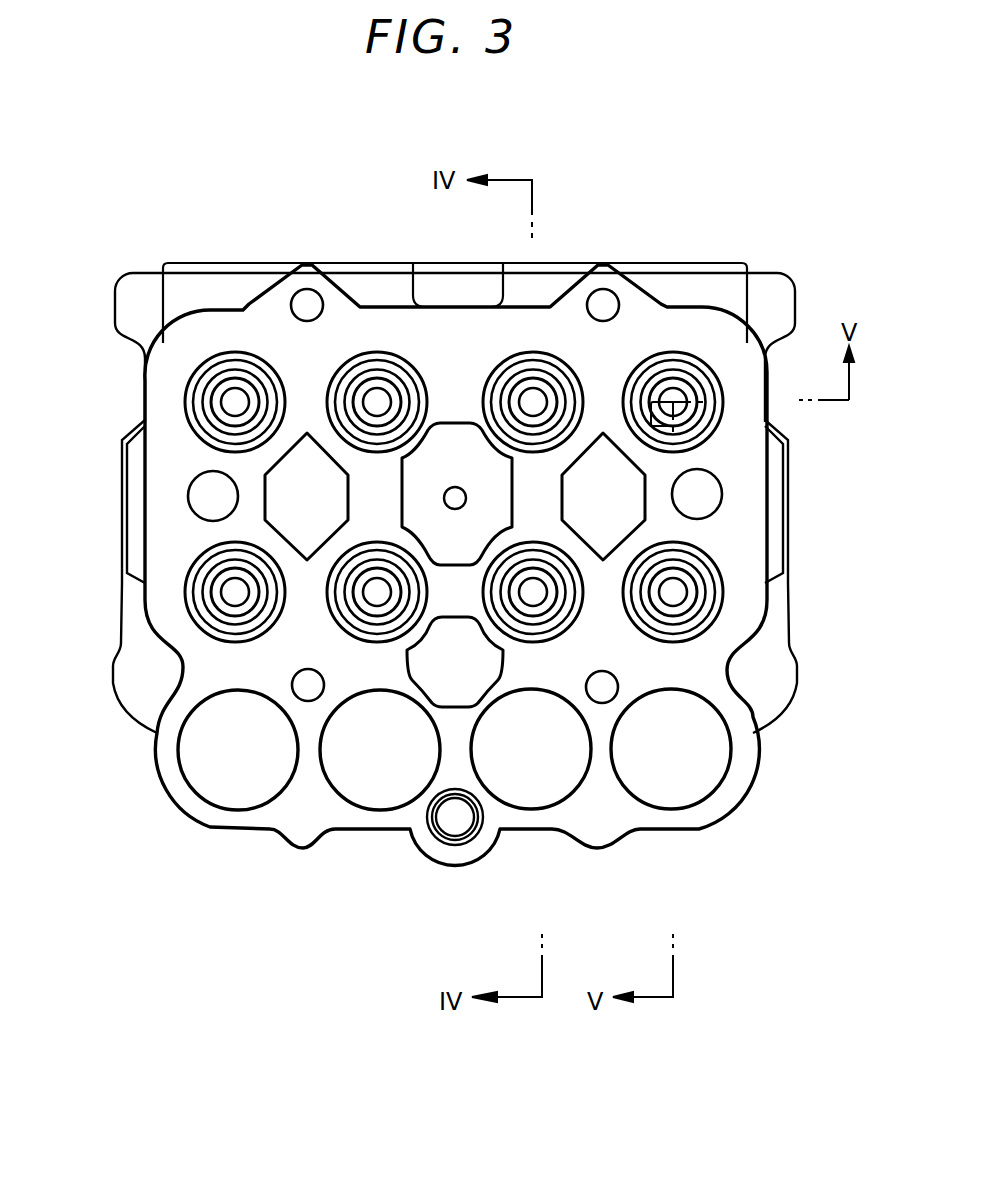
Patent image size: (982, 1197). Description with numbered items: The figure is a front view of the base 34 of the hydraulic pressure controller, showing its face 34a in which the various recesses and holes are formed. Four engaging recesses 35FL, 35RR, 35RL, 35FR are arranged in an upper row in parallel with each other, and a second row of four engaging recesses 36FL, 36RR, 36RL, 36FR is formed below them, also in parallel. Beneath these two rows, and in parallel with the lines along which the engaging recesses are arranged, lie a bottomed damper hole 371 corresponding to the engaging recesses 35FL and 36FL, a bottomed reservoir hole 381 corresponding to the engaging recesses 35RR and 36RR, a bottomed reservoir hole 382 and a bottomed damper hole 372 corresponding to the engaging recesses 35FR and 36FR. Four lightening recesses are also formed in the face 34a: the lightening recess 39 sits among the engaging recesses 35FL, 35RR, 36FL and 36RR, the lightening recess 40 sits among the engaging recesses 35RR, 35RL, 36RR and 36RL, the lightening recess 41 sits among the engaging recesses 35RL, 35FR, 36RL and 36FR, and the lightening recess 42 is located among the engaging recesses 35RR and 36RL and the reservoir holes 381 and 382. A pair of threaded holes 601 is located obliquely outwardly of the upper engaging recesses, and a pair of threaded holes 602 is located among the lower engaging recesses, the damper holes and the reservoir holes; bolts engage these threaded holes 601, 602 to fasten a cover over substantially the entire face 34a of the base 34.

The base 34 is at (142, 703).
The face of the base 34a is at (462, 330).
The engaging recess 35FL is at (197, 400).
The engaging recess 35RR is at (355, 368).
The engaging recess 35RL is at (548, 362).
The engaging recess 35FR is at (676, 360).
The engaging recess 36FL is at (224, 628).
The engaging recess 36RR is at (370, 628).
The engaging recess 36RL is at (524, 628).
The engaging recess 36FR is at (675, 628).
The damper hole 371 is at (220, 796).
The damper hole 372 is at (677, 792).
The reservoir hole 381 is at (371, 795).
The reservoir hole 382 is at (532, 792).
The lightening recess 39 is at (270, 530).
The lightening recess 40 is at (406, 494).
The lightening recess 41 is at (642, 474).
The lightening recess 42 is at (490, 676).
The threaded hole 601 is at (304, 298).
The threaded hole 602 is at (296, 688).